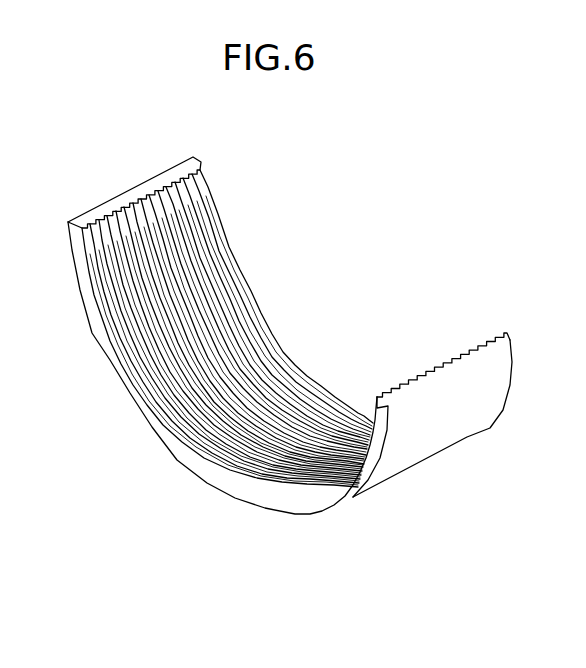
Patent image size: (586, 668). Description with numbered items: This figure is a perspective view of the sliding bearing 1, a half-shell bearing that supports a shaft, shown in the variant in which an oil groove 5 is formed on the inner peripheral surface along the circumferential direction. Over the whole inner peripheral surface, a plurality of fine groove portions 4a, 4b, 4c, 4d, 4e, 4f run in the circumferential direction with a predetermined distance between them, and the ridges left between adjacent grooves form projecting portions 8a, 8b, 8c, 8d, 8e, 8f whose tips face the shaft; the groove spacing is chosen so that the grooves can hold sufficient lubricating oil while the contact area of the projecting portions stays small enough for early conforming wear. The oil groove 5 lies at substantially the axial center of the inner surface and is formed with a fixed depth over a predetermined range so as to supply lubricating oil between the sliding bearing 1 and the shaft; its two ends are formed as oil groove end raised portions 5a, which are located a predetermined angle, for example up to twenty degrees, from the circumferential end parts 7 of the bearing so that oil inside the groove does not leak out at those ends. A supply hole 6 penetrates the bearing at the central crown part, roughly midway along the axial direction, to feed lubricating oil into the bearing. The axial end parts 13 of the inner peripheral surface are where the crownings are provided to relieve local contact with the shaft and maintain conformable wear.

The sliding bearing 1 is at (468, 440).
The groove portion 4a is at (227, 393).
The groove portion 4b is at (227, 393).
The groove portion 4c is at (227, 393).
The groove portion 4d is at (227, 393).
The groove portion 4e is at (227, 393).
The groove portion 4f is at (227, 393).
The oil groove 5 is at (205, 368).
The oil groove end raised portion 5a is at (157, 258).
The supply hole 6 is at (300, 446).
The end part 7 is at (167, 177).
The projecting portion 8a is at (227, 393).
The projecting portion 8b is at (227, 393).
The projecting portion 8c is at (227, 393).
The projecting portion 8d is at (227, 393).
The projecting portion 8e is at (227, 393).
The projecting portion 8f is at (212, 475).
The end part in the axial direction 13 is at (257, 322).